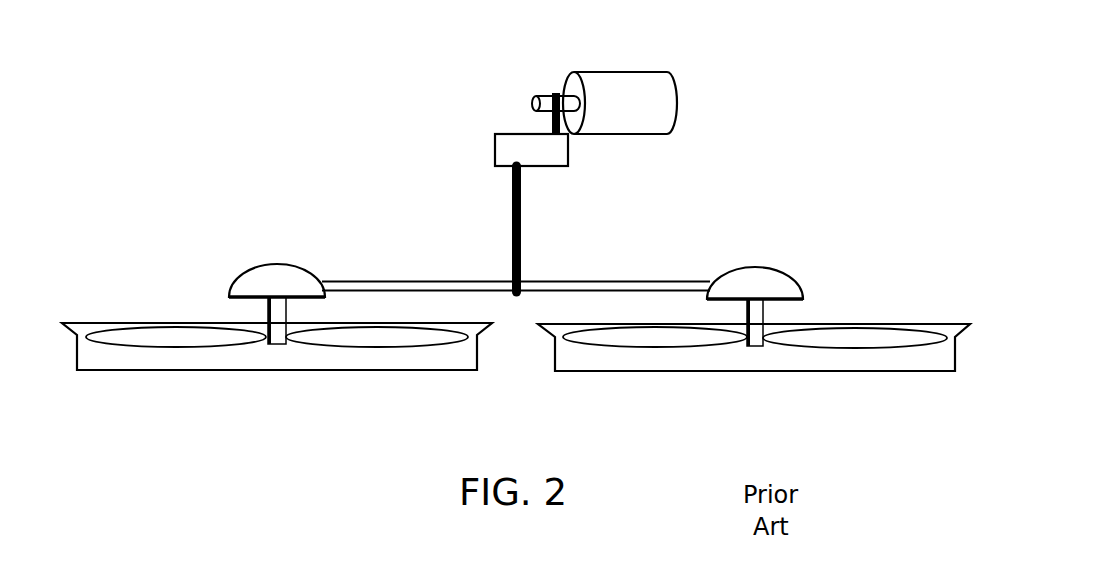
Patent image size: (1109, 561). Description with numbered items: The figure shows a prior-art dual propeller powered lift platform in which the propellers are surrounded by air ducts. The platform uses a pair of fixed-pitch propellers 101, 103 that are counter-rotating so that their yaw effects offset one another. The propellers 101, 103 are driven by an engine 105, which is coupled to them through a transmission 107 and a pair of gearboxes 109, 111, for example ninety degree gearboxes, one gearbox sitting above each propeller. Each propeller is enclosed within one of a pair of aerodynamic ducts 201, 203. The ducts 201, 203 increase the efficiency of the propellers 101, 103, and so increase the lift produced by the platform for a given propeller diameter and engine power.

The propeller 101 is at (236, 356).
The propeller 103 is at (812, 360).
The engine 105 is at (636, 105).
The transmission 107 is at (495, 150).
The gearbox 109 is at (255, 272).
The gearbox 111 is at (792, 282).
The aerodynamic duct 201 is at (435, 372).
The aerodynamic duct 203 is at (628, 372).